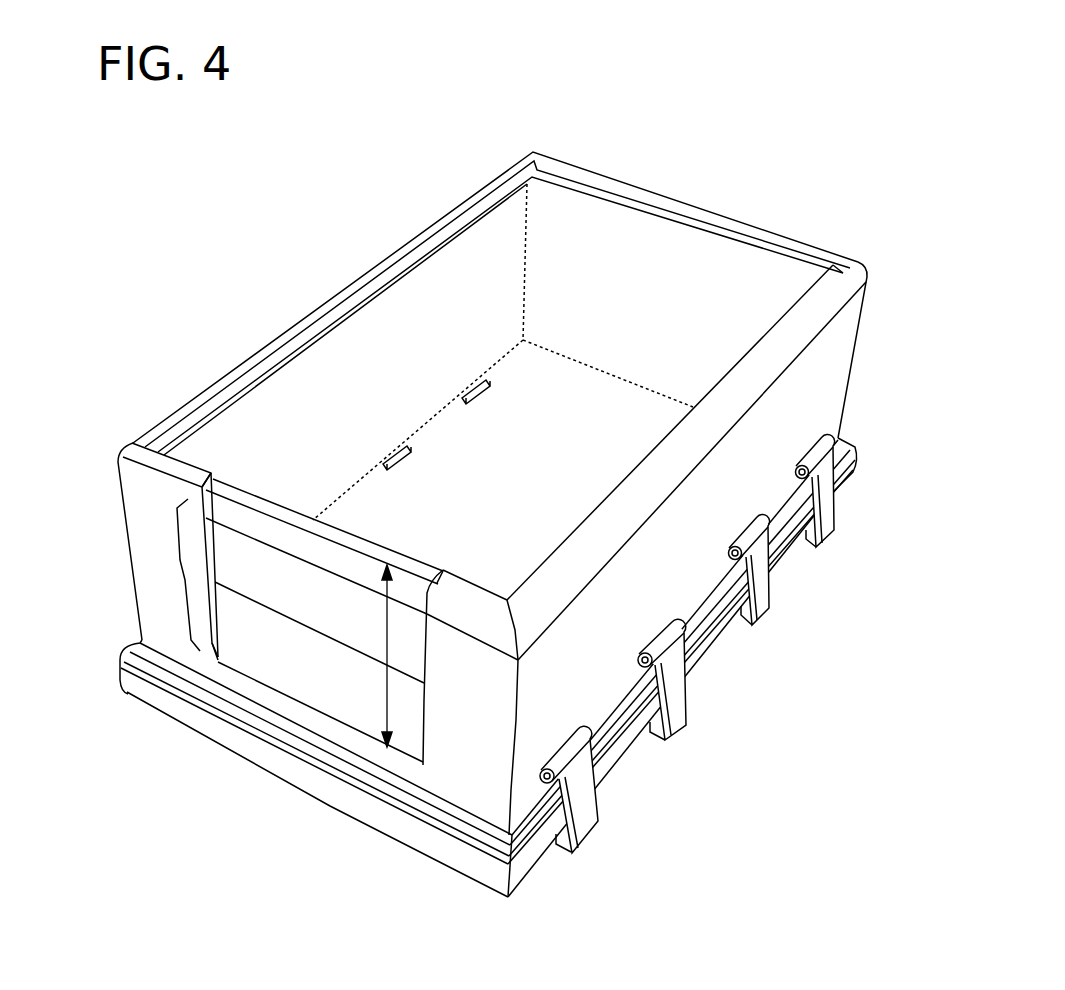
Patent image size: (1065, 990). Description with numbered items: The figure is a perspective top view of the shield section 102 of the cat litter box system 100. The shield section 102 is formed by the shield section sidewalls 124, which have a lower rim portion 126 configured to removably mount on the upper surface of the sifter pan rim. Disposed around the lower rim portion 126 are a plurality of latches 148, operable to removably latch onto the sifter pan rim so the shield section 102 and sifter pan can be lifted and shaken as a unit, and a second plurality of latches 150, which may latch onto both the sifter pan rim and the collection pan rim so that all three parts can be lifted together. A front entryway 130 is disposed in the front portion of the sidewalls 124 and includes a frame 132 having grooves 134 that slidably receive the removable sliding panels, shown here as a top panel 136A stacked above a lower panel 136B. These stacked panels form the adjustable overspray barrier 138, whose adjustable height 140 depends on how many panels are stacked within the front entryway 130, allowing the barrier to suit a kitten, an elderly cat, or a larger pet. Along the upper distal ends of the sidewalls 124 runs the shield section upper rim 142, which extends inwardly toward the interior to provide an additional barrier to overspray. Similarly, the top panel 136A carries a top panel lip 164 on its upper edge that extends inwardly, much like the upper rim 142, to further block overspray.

The cat litter box system 100 is at (762, 100).
The shield section 102 is at (866, 359).
The shield section sidewalls 124 is at (487, 268).
The lower rim portion 126 is at (122, 678).
The front entryway 130 is at (422, 766).
The frame 132 is at (426, 652).
The grooves 134 is at (208, 470).
The top panel 136A is at (337, 613).
The sliding panel 136B is at (337, 683).
The adjustable overspray barrier 138 is at (180, 577).
The adjustable height 140 is at (390, 660).
The shield section upper rim 142 is at (333, 303).
The latches 148 is at (822, 527).
The latches 150 is at (757, 610).
The top panel lip 164 is at (330, 528).